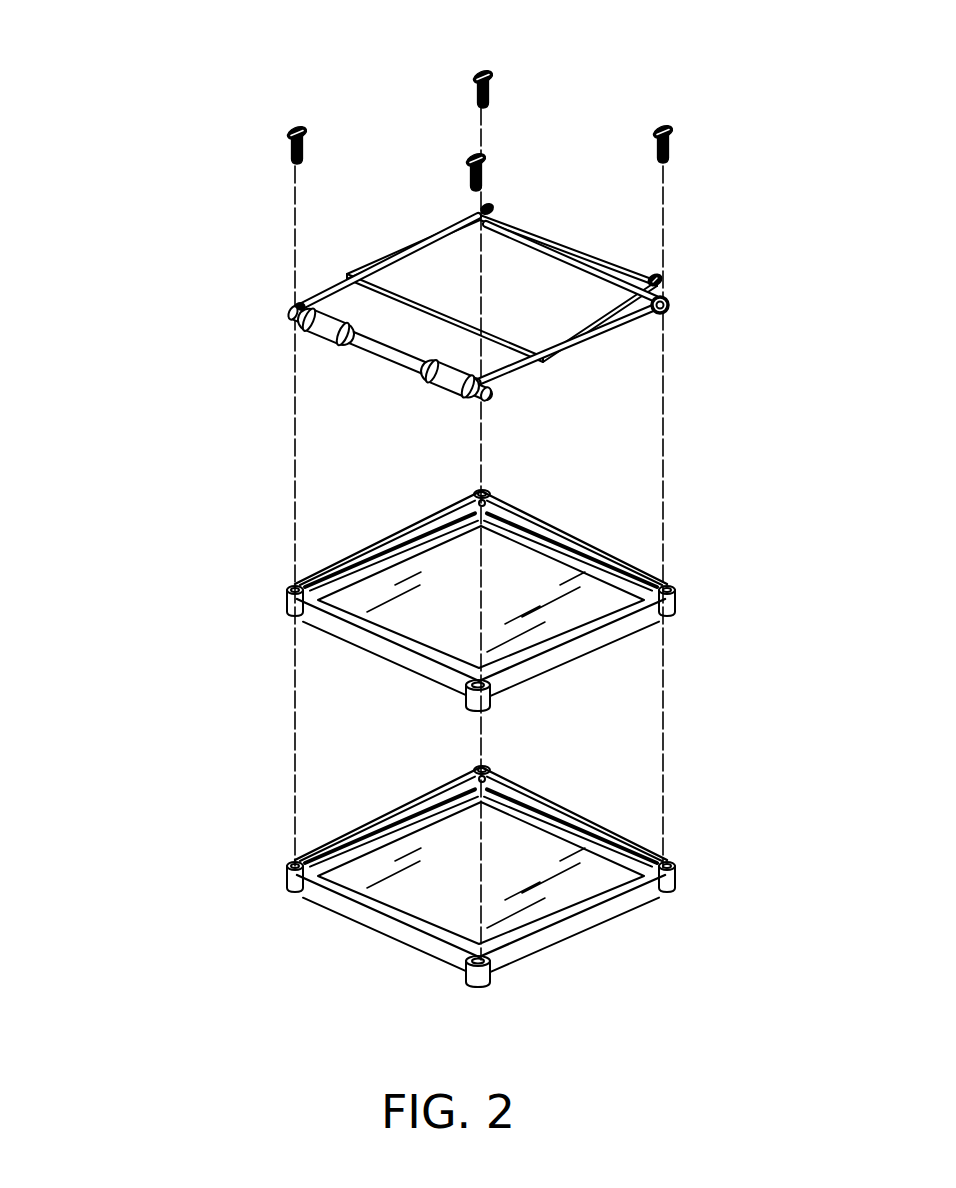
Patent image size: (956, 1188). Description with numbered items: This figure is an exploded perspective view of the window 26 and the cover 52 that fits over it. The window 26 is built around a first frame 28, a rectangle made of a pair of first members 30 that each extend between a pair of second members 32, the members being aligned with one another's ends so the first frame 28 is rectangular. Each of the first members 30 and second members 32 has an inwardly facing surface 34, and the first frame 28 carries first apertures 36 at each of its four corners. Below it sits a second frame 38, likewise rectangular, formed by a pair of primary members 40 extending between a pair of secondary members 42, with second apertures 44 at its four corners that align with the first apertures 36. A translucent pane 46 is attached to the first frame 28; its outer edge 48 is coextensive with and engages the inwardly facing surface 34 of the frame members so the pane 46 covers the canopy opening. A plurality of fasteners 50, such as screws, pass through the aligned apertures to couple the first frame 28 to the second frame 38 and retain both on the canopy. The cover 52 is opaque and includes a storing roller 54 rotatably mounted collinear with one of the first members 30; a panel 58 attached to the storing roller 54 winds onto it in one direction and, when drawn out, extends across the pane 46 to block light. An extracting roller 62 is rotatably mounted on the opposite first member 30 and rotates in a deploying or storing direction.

The window 26 is at (180, 565).
The first frame 28 is at (481, 589).
The first members 30 is at (590, 532).
The second members 32 is at (338, 559).
The inwardly facing surface 34 is at (537, 526).
The first apertures 36 is at (284, 574).
The second frame 38 is at (493, 905).
The primary members 40 is at (607, 832).
The secondary members 42 is at (361, 832).
The second apertures 44 is at (284, 852).
The pane 46 is at (587, 603).
The outer edge 48 is at (387, 940).
The fasteners 50 is at (289, 130).
The cover 52 is at (282, 284).
The storing roller 54 is at (669, 305).
The panel 58 is at (452, 262).
The extracting roller 62 is at (392, 361).